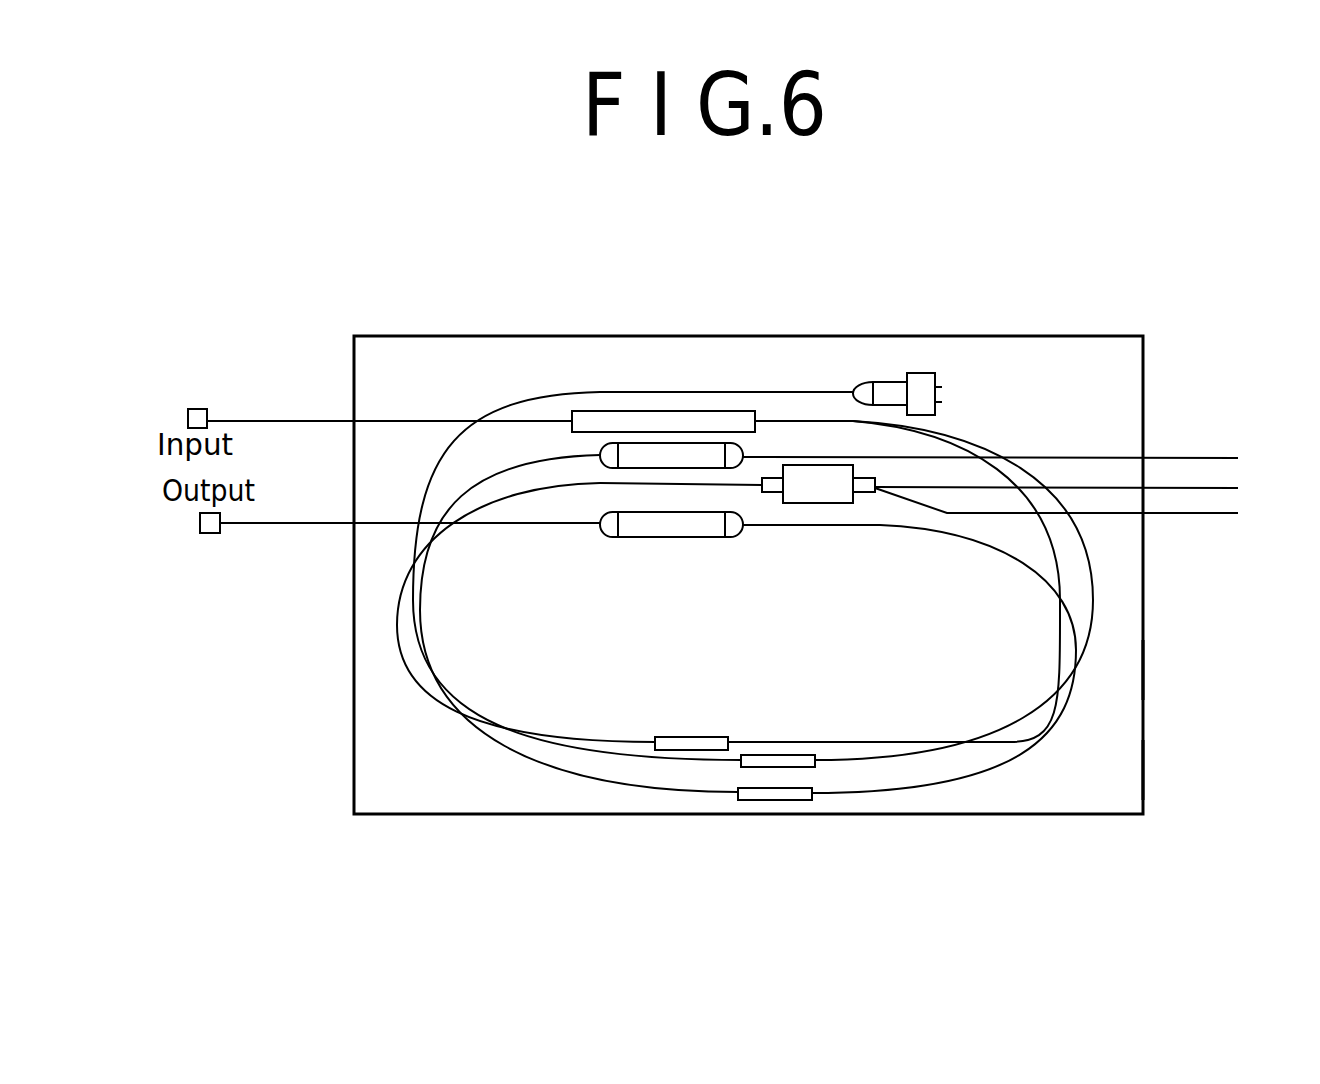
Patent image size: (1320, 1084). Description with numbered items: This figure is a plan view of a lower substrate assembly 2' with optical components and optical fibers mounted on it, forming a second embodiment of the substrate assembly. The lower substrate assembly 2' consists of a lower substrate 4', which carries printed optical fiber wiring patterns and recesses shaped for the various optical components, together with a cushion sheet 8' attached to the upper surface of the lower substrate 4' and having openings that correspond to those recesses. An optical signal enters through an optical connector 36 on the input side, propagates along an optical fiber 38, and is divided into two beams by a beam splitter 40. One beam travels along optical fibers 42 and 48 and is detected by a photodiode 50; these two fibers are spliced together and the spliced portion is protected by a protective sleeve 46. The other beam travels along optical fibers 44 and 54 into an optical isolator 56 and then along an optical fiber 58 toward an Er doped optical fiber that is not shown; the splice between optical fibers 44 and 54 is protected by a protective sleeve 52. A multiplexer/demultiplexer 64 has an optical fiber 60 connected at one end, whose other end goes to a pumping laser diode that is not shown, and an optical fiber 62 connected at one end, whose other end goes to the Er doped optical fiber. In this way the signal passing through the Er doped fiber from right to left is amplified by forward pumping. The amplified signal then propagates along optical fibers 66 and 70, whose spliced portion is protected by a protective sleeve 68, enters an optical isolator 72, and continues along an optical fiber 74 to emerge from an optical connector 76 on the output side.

The lower substrate assembly 2' is at (748, 524).
The lower substrate 4' is at (1175, 770).
The cushion sheet 8' is at (1161, 670).
The optical connector 36 is at (197, 407).
The optical fiber 38 is at (312, 417).
The beam splitter 40 is at (672, 408).
The optical fiber 42 is at (1022, 445).
The optical fiber 44 is at (978, 442).
The protective sleeve 46 is at (762, 768).
The optical fiber 48 is at (613, 763).
The photodiode 50 is at (920, 385).
The protective sleeve 52 is at (688, 752).
The optical fiber 54 is at (523, 732).
The optical isolator 56 is at (636, 452).
The optical fiber 58 is at (1213, 456).
The optical fiber 60 is at (1188, 516).
The optical fiber 62 is at (1180, 485).
The multiplexer/demultiplexer 64 is at (813, 482).
The optical fiber 66 is at (520, 487).
The protective sleeve 68 is at (796, 801).
The optical fiber 70 is at (964, 781).
The optical isolator 72 is at (707, 522).
The optical fiber 74 is at (310, 527).
The optical connector 76 is at (207, 536).